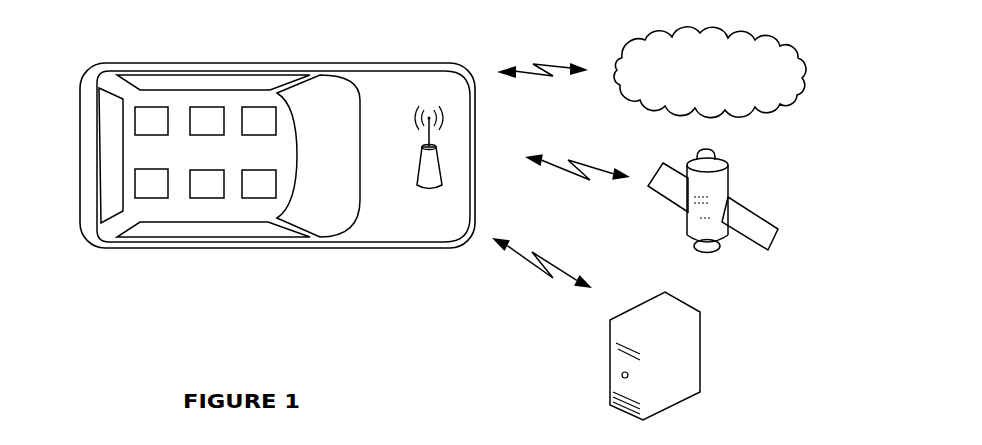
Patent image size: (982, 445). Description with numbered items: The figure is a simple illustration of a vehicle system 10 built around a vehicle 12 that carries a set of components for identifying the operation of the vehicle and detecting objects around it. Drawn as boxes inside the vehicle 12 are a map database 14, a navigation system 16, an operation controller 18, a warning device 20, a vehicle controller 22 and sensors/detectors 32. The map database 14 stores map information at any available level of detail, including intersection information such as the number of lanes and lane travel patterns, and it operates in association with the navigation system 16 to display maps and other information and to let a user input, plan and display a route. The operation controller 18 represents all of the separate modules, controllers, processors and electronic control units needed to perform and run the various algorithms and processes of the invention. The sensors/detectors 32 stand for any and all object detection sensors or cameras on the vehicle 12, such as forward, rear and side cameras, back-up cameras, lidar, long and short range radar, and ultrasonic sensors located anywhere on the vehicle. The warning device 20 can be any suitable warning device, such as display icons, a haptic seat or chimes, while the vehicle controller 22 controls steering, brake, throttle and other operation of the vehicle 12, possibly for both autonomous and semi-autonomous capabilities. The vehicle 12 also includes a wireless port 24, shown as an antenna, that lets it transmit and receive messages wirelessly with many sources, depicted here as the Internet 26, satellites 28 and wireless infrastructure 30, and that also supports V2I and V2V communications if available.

The vehicle system 10 is at (64, 253).
The vehicle 12 is at (403, 254).
The map database 14 is at (152, 107).
The navigation system 16 is at (135, 182).
The operation controller 18 is at (207, 198).
The warning device 20 is at (258, 107).
The vehicle controller 22 is at (259, 198).
The wireless port 24 is at (418, 169).
The Internet 26 is at (790, 93).
The satellites 28 is at (730, 190).
The wireless infrastructure 30 is at (680, 298).
The sensors/detectors 32 is at (210, 107).